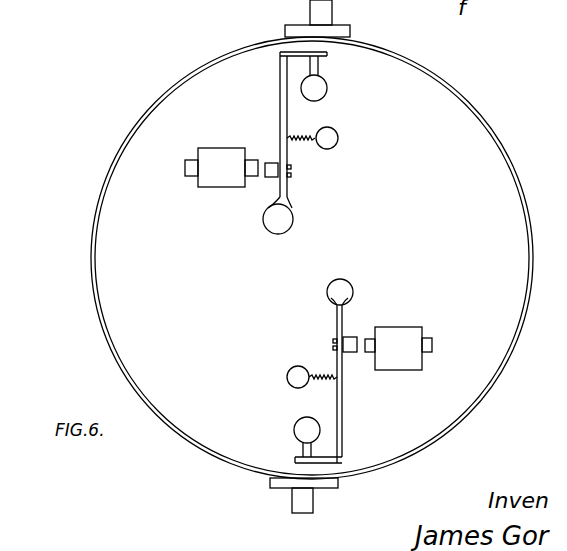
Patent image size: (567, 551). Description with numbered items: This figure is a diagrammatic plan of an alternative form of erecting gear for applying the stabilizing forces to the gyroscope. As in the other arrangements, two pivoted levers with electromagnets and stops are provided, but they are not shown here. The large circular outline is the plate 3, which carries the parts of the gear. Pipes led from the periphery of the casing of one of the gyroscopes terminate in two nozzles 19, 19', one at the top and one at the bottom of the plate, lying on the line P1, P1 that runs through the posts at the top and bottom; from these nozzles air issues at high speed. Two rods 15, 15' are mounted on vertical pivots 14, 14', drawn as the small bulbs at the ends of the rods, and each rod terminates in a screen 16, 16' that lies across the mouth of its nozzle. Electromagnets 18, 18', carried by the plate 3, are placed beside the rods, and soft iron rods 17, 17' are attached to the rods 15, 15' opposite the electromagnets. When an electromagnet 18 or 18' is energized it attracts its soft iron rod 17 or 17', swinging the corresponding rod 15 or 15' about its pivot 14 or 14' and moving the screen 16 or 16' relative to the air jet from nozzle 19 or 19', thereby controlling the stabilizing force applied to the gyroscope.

The plate 3 is at (312, 258).
The line p1, p1 P1 is at (332, 8).
The vertical pivot 14 is at (353, 292).
The rod 15 is at (353, 384).
The screen 16 is at (332, 452).
The soft iron rod 17 is at (331, 351).
The electromagnet 18 is at (398, 348).
The nozzle 19 is at (307, 437).
The vertical pivot 14' is at (294, 215).
The rod 15' is at (266, 124).
The screen 16' is at (325, 65).
The soft iron rod 17' is at (298, 152).
The electromagnet 18' is at (221, 167).
The nozzle 19' is at (314, 78).